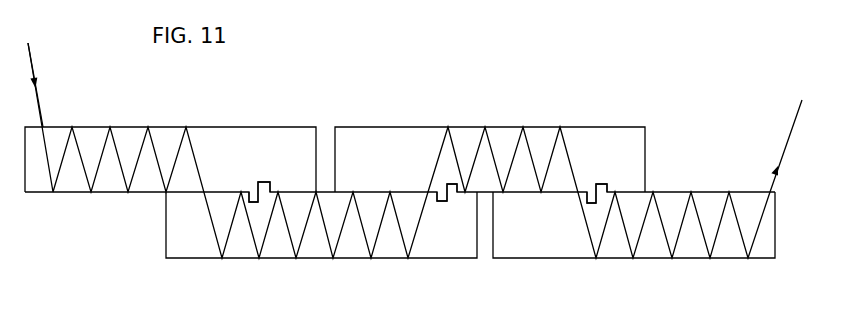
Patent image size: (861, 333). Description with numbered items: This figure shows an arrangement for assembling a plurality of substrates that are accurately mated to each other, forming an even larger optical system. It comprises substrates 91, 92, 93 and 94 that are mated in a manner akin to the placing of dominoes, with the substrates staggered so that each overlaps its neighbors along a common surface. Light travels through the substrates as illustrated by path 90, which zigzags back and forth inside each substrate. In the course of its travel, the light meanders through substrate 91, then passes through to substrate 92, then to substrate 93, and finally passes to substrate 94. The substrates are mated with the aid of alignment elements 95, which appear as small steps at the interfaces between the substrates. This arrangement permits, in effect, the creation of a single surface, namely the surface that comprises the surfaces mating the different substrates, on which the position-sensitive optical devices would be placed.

The path 90 is at (40, 101).
The substrate 91 is at (245, 127).
The substrate 92 is at (190, 258).
The substrate 93 is at (395, 127).
The substrate 94 is at (538, 256).
The alignment element 95 is at (264, 182).